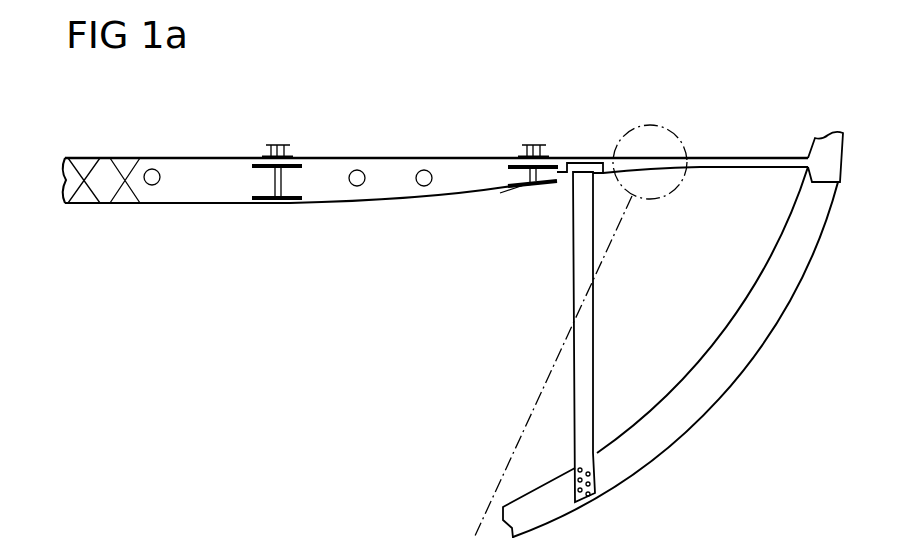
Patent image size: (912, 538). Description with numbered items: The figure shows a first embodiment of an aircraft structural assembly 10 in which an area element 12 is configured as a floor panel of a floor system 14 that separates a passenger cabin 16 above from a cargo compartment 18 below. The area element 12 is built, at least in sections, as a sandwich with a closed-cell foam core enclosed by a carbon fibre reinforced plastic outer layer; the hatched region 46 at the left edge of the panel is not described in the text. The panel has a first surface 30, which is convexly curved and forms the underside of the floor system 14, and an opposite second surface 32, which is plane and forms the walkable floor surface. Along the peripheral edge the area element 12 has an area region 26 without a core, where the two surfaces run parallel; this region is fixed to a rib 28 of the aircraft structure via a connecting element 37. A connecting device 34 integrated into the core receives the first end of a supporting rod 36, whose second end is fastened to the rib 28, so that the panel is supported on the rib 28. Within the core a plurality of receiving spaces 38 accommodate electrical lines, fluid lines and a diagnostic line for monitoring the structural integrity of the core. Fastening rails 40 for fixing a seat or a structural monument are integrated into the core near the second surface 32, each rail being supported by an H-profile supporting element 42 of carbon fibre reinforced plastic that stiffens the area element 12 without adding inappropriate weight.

The aircraft structural assembly 10 is at (787, 86).
The area element 12 is at (100, 192).
The floor system 14 is at (722, 147).
The passenger cabin 16 is at (192, 110).
The cargo compartment 18 is at (192, 288).
The area region 26 is at (760, 172).
The rib 28 is at (740, 331).
The first surface 30 is at (343, 207).
The second surface 32 is at (327, 152).
The connecting device 34 is at (585, 163).
The supporting rod 36 is at (596, 313).
The connecting element 37 is at (827, 167).
The receiving spaces 38 is at (152, 169).
The fastening rails 40 is at (278, 143).
The supporting element 42 is at (262, 181).
The core 46 is at (72, 164).